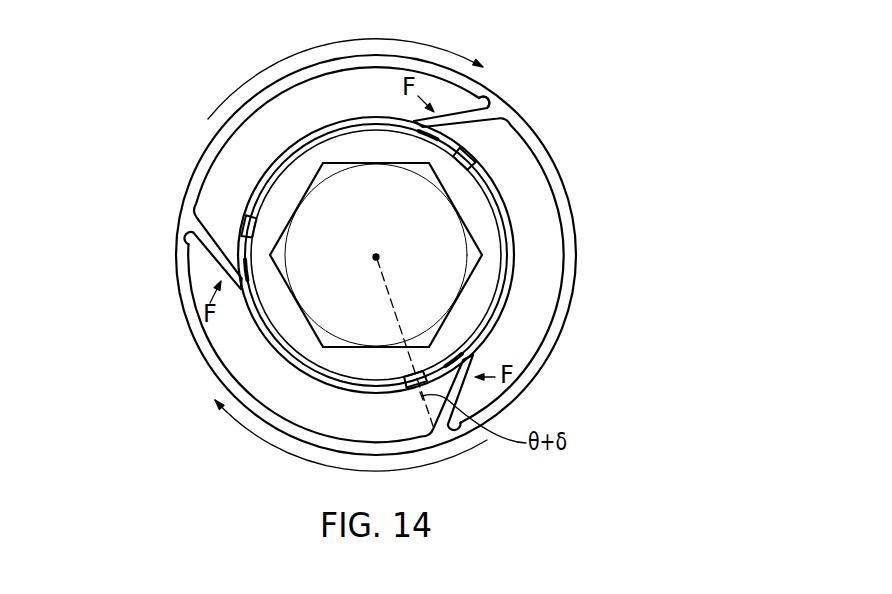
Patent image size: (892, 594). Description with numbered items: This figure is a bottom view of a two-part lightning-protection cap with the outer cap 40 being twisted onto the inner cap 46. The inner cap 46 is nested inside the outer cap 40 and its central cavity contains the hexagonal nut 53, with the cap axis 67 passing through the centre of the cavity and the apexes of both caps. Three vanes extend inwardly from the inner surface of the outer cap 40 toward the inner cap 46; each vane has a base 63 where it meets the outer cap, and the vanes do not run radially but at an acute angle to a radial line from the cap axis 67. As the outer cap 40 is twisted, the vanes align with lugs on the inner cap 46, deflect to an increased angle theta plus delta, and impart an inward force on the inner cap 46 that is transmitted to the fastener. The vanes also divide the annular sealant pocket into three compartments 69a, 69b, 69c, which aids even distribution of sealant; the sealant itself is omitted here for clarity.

The outer cap 40 is at (572, 303).
The inner cap 46 is at (510, 208).
The nut 53 is at (470, 153).
The base of vane 63 is at (487, 109).
The cap axis 67 is at (373, 256).
The sealant pocket compartment 69a is at (303, 133).
The sealant pocket compartment 69b is at (287, 390).
The sealant pocket compartment 69c is at (560, 280).